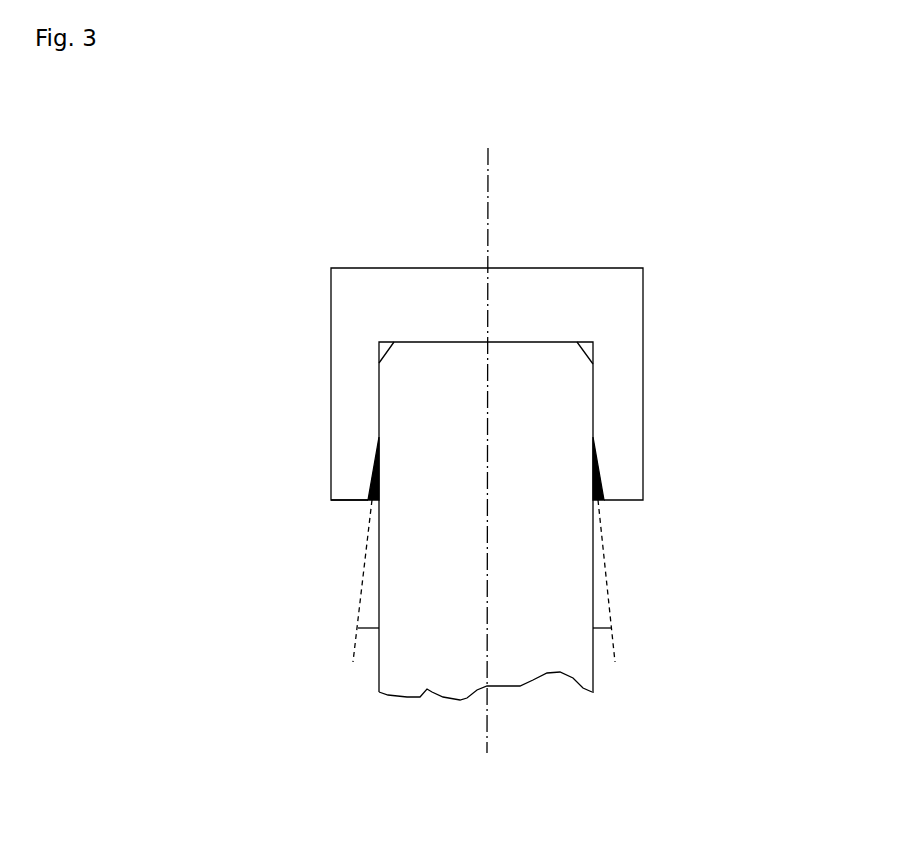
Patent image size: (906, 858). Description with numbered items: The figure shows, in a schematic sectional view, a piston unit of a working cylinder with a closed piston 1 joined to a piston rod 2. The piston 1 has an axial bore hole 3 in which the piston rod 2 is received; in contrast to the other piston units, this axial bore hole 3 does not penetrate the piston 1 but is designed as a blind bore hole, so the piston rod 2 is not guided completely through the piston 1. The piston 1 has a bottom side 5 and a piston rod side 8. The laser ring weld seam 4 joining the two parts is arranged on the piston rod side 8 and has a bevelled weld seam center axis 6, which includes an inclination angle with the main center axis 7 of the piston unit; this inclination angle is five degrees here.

The piston 1 is at (352, 358).
The piston rod 2 is at (545, 317).
The axial bore hole 3 is at (377, 292).
The laser ring weld seam 4 is at (599, 473).
The bottom side 5 is at (618, 237).
The weld seam center axis 6 is at (603, 568).
The main center axis 7 is at (488, 243).
The piston rod side 8 is at (337, 523).